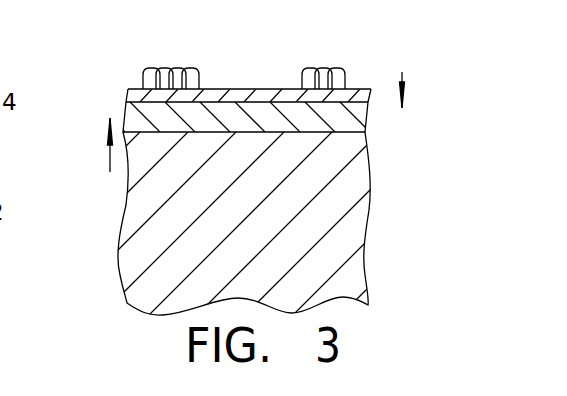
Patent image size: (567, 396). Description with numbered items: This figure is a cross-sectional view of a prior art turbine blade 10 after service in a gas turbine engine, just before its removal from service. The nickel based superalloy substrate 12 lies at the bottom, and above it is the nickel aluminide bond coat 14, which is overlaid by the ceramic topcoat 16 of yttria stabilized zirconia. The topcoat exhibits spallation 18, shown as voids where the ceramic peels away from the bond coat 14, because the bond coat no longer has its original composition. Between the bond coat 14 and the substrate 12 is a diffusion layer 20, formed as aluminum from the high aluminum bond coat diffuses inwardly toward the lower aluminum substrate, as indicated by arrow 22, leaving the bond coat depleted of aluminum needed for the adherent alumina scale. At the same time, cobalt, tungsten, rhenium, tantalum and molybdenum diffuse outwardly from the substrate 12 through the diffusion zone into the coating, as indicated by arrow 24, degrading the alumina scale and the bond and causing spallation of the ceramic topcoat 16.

The turbine blade 10 is at (92, 268).
The nickel based superalloy substrate 12 is at (365, 223).
The bond coat 14 is at (373, 95).
The ceramic topcoat 16 is at (322, 68).
The spallation 18 is at (246, 56).
The diffusion layer 20 is at (370, 115).
The arrow 22 is at (404, 78).
The arrow 24 is at (110, 158).